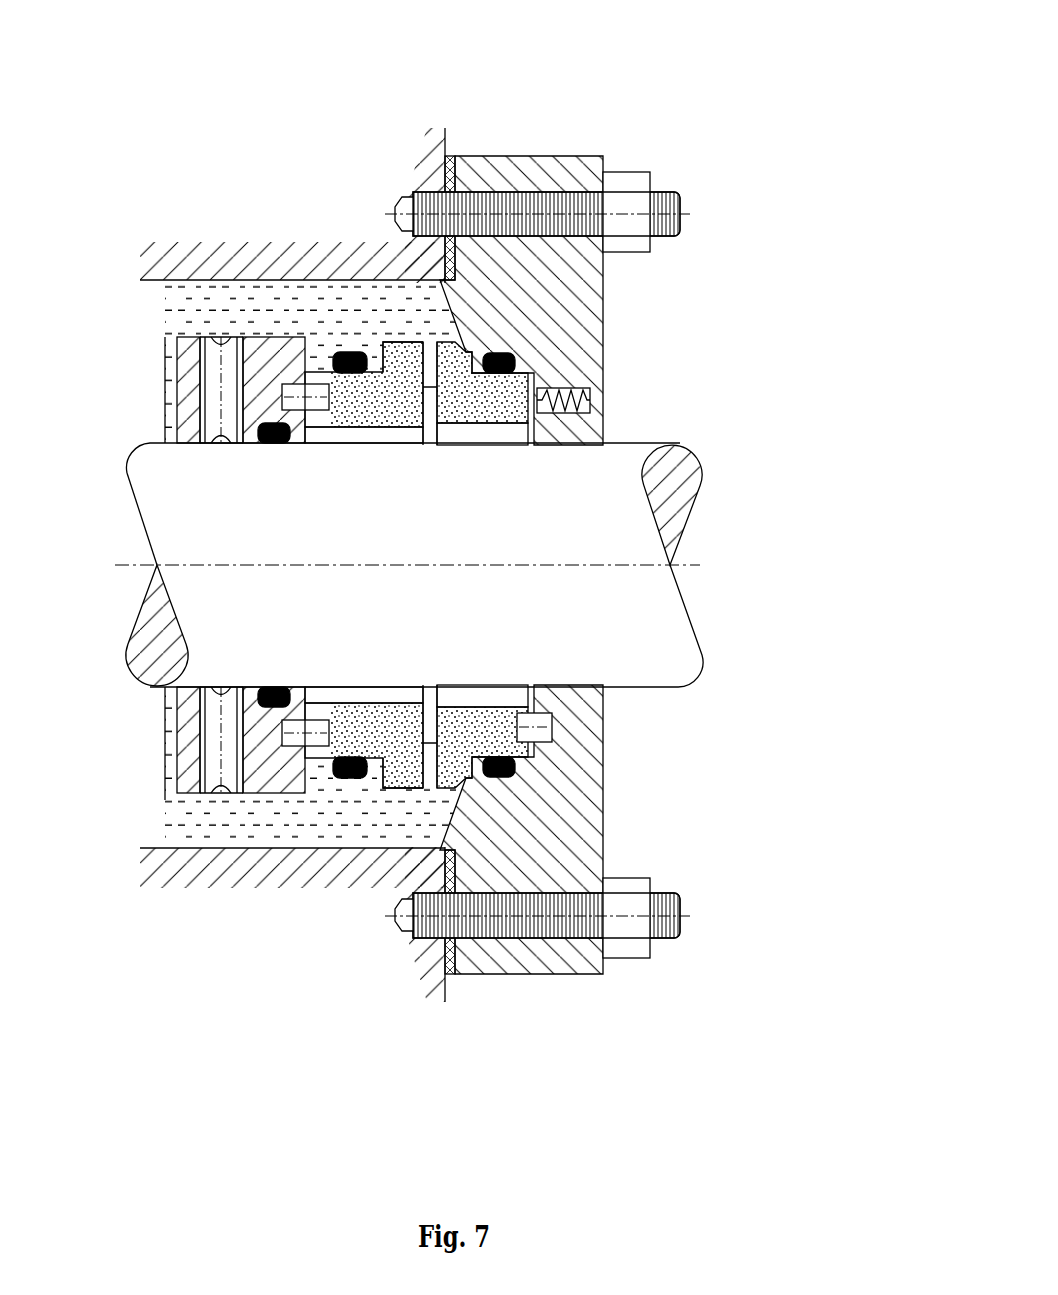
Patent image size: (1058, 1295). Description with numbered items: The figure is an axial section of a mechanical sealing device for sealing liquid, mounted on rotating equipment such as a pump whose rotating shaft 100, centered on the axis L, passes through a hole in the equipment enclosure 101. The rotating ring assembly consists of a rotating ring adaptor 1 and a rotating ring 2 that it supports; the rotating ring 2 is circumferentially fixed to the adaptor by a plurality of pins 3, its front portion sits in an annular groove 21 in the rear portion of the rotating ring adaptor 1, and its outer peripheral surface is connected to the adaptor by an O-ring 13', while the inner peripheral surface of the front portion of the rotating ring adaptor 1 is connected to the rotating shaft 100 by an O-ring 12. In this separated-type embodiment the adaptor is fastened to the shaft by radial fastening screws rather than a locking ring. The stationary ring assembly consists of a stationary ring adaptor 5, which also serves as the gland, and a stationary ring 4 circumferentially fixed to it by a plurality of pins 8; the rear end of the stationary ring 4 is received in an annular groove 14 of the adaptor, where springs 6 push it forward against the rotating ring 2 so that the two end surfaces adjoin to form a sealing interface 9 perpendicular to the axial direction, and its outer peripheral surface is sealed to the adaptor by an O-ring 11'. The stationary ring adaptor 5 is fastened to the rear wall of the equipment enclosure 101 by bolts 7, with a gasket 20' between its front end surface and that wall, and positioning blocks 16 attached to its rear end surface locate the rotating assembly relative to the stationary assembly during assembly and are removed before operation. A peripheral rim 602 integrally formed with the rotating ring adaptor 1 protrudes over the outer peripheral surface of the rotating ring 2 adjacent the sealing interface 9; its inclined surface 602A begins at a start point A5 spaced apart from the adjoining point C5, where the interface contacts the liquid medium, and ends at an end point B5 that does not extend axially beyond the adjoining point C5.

The rotating shaft 100 is at (663, 502).
The axis L is at (444, 567).
The equipment enclosure 101 is at (258, 175).
The rotating ring adaptor 1 is at (192, 403).
The rotating ring 2 is at (343, 398).
The pins 3 is at (300, 753).
The stationary ring 4 is at (490, 390).
The stationary ring adaptor 5 is at (592, 300).
The springs 6 is at (595, 404).
The bolts 7 is at (680, 216).
The pins 8 is at (550, 742).
The sealing interface 9 is at (420, 368).
The O-ring 12 is at (262, 708).
The O-ring 13' is at (322, 678).
The annular groove 14 is at (533, 436).
The positioning blocks 16 is at (603, 725).
The gasket 20' is at (515, 763).
The annular groove 21 is at (320, 754).
The O-ring 11' is at (552, 901).
The peripheral rim 602 is at (397, 313).
The inclined surface 602A is at (422, 827).
The start point A5 is at (403, 800).
The end point B5 is at (422, 303).
The adjoining point C5 is at (420, 345).